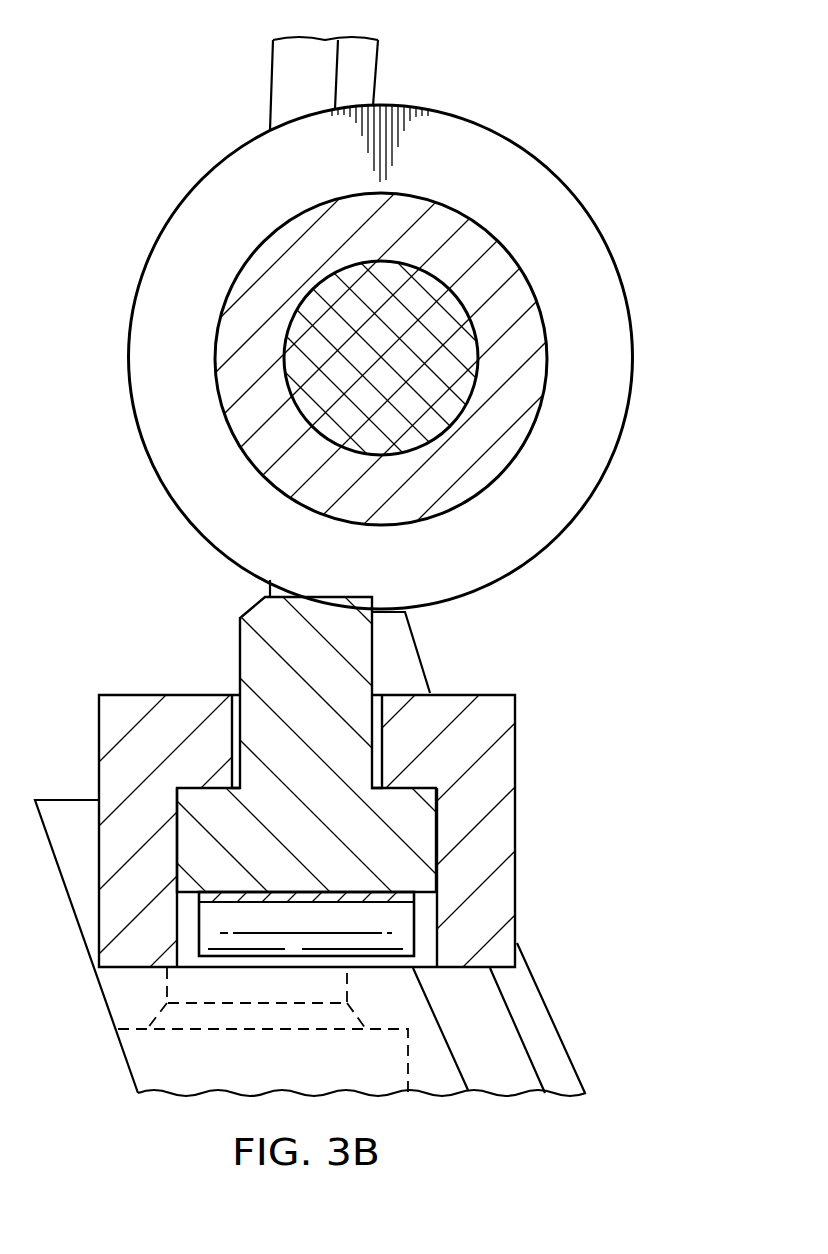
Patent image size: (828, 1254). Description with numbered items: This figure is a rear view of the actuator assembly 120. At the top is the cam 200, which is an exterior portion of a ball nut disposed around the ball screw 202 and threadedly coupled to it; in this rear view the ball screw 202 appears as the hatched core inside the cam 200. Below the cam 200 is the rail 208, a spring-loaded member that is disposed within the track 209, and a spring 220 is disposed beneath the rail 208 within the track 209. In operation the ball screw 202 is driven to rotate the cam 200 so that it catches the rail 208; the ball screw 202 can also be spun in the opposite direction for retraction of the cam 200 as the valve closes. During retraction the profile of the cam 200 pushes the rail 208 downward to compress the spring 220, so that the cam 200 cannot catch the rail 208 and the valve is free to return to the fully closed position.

The actuator assembly 120 is at (158, 72).
The cam 200 is at (633, 357).
The ball screw 202 is at (355, 278).
The rail 208 is at (248, 654).
The track 209 is at (506, 832).
The spring 220 is at (293, 942).